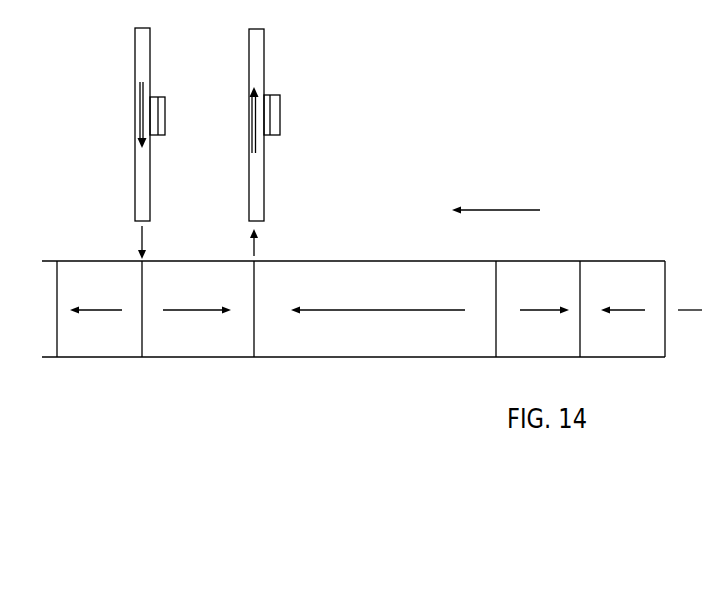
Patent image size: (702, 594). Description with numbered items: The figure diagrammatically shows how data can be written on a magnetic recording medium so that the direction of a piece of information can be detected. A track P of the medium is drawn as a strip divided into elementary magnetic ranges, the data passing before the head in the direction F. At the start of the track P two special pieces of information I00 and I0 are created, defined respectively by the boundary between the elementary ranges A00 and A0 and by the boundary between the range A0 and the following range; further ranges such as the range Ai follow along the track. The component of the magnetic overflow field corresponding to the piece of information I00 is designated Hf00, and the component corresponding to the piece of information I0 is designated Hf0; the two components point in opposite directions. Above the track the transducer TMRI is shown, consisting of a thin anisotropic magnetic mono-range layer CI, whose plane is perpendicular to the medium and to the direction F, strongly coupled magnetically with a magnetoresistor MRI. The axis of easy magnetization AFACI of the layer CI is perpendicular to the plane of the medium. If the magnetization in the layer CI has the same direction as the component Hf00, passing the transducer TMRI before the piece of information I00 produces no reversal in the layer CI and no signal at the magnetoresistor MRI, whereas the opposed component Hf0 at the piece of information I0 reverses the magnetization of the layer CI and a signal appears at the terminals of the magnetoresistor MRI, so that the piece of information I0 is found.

The transducer TMRI is at (108, 42).
The magnetic mono-range layer CI is at (135, 82).
The magnetoresistor MRI is at (166, 107).
The axis of easy magnetization of the mono-range layer AFACI is at (138, 127).
The magnetic overflow field component Hf00 is at (120, 242).
The magnetic overflow field component Hf0 is at (271, 243).
The elementary range A00 is at (96, 327).
The elementary range A0 is at (197, 327).
The elementary range Ai is at (377, 357).
The piece of information I00 is at (118, 329).
The piece of information I0 is at (224, 329).
The track P is at (55, 360).
The direction of data passage F is at (505, 206).